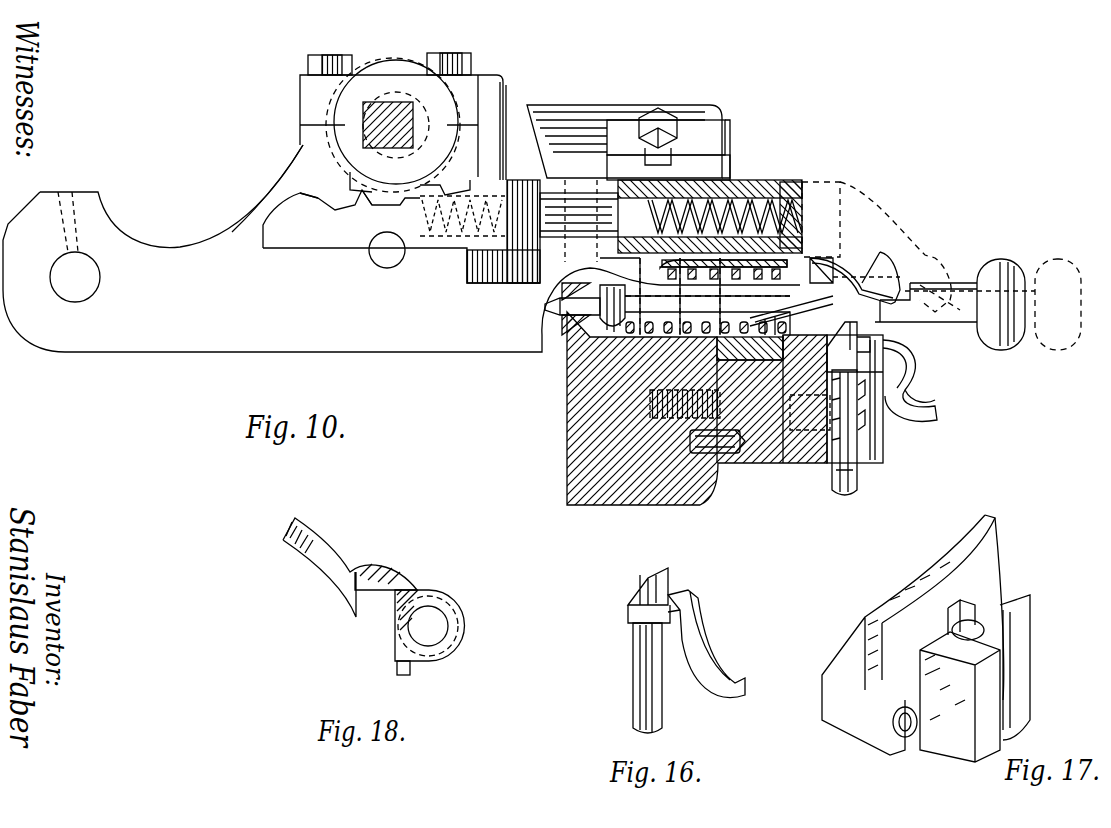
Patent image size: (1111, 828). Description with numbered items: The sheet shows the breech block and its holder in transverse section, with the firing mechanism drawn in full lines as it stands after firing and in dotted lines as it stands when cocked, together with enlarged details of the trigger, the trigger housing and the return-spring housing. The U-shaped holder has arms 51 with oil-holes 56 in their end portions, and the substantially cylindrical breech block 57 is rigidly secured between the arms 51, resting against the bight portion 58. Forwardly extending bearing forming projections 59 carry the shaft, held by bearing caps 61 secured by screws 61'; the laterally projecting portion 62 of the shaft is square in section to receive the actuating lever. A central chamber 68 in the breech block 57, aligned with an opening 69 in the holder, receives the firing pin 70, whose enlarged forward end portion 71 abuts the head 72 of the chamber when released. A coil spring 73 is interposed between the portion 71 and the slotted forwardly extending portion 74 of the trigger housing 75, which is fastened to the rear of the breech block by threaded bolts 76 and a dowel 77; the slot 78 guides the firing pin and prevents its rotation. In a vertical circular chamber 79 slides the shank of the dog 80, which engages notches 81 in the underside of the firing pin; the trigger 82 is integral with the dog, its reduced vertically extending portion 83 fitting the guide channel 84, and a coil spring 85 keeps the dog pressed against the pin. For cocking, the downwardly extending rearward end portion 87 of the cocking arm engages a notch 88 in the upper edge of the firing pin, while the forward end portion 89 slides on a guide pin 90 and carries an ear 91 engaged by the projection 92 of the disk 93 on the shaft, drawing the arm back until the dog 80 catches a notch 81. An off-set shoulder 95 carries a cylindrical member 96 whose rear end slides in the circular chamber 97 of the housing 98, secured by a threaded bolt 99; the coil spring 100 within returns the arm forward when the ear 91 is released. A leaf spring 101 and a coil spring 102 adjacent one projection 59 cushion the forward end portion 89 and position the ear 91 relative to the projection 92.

In FIG. 10, the arms 51 is at (403, 335).
In FIG. 10, the oil-holes 56 is at (70, 207).
In FIG. 10, the breech block 57 is at (575, 460).
In FIG. 10, the bight portion 58 is at (738, 278).
In FIG. 10, the bearing forming projections 59 is at (297, 176).
In FIG. 10, the bearing caps 61 is at (384, 127).
In FIG. 10, the screws 61' is at (405, 53).
In FIG. 10, the laterally projecting portion of the shaft 62 is at (365, 140).
In FIG. 10, the chamber 68 is at (690, 342).
In FIG. 10, the opening 69 is at (828, 272).
In FIG. 10, the firing pin 70 is at (948, 285).
In FIG. 10, the forward end portion of the firing pin 71 is at (655, 292).
In FIG. 10, the head 72 is at (556, 303).
In FIG. 10, the coil spring 73 is at (640, 333).
In FIG. 10, the slotted forwardly extending portion 74 is at (845, 255).
In FIG. 17, the slotted forwardly extending portion 74 is at (955, 555).
In FIG. 10, the trigger housing 75 is at (805, 463).
In FIG. 17, the trigger housing 75 is at (897, 700).
In FIG. 10, the threaded bolts 76 is at (773, 463).
In FIG. 10, the dowel 77 is at (727, 455).
In FIG. 17, the slot 78 is at (975, 585).
In FIG. 17, the circular chamber 79 is at (995, 635).
In FIG. 10, the dog 80 is at (852, 340).
In FIG. 16, the dog 80 is at (640, 608).
In FIG. 10, the notches 81 is at (772, 316).
In FIG. 10, the trigger 82 is at (900, 395).
In FIG. 16, the trigger 82 is at (712, 665).
In FIG. 10, the reduced vertically extending portion 83 is at (878, 370).
In FIG. 16, the reduced vertically extending portion 83 is at (650, 660).
In FIG. 10, the guide channel 84 is at (885, 462).
In FIG. 17, the guide channel 84 is at (1010, 690).
In FIG. 10, the coil spring 85 is at (878, 442).
In FIG. 10, the rearward end portion 87 is at (895, 250).
In FIG. 10, the notch 88 is at (905, 284).
In FIG. 10, the forward end portion 89 is at (348, 250).
In FIG. 10, the guide pin 90 is at (385, 268).
In FIG. 10, the ear 91 is at (372, 197).
In FIG. 10, the projection 92 is at (445, 172).
In FIG. 10, the disk 93 is at (435, 112).
In FIG. 10, the off-set portion or shoulder 95 is at (548, 215).
In FIG. 10, the cylindrical member 96 is at (572, 203).
In FIG. 10, the circular chamber 97 is at (748, 200).
In FIG. 18, the circular chamber 97 is at (433, 622).
In FIG. 10, the housing 98 is at (790, 190).
In FIG. 18, the housing 98 is at (385, 572).
In FIG. 10, the threaded bolt 99 is at (663, 112).
In FIG. 10, the coil spring 100 is at (812, 207).
In FIG. 10, the leaf spring 101 is at (508, 102).
In FIG. 10, the coil spring 102 is at (462, 214).